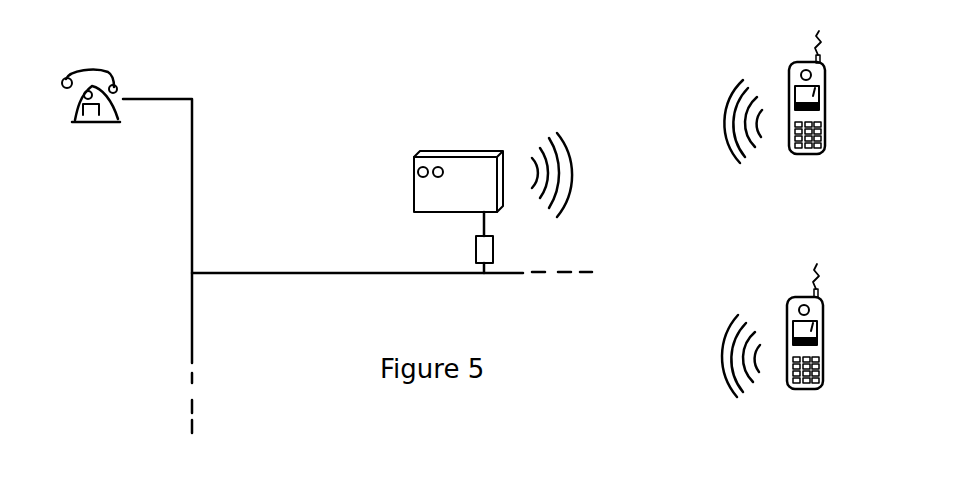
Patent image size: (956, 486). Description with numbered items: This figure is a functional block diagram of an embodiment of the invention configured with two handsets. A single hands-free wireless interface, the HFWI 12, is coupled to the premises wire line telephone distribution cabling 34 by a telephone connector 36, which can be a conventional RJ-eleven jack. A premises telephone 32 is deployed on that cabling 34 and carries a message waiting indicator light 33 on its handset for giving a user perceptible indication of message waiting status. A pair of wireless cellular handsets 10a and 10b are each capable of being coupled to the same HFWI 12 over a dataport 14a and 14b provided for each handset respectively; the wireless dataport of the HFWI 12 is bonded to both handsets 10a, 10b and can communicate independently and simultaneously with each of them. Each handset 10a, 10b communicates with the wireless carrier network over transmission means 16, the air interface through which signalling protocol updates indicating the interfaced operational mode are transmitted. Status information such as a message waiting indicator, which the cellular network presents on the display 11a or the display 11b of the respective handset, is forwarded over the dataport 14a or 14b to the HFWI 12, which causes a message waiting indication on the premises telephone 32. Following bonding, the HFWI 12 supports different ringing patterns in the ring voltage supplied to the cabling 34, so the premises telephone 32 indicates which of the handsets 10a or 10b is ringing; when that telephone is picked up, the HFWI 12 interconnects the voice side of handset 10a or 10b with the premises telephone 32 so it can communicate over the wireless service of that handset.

The handset 10a is at (788, 90).
The handset 10b is at (785, 320).
The display 11a is at (822, 82).
The display 11b is at (820, 315).
The HFWI 12 is at (412, 180).
The dataport 14a is at (714, 118).
The dataport 14b is at (599, 226).
The transmission means 16 is at (817, 150).
The premises telephone 32 is at (80, 127).
The message waiting indicator light 33 is at (72, 97).
The premises wire line telephone distribution cabling 34 is at (190, 227).
The telephone connector 36 is at (493, 245).